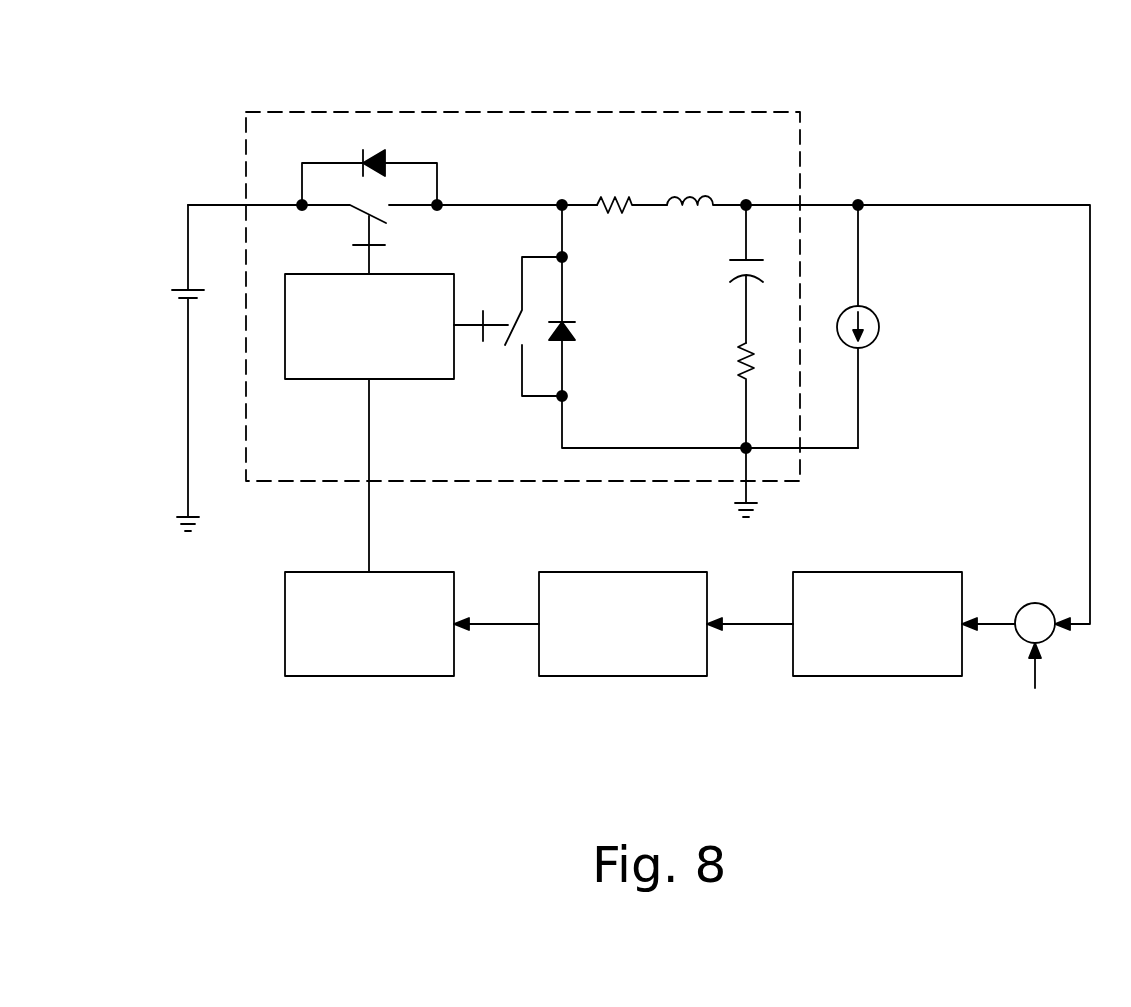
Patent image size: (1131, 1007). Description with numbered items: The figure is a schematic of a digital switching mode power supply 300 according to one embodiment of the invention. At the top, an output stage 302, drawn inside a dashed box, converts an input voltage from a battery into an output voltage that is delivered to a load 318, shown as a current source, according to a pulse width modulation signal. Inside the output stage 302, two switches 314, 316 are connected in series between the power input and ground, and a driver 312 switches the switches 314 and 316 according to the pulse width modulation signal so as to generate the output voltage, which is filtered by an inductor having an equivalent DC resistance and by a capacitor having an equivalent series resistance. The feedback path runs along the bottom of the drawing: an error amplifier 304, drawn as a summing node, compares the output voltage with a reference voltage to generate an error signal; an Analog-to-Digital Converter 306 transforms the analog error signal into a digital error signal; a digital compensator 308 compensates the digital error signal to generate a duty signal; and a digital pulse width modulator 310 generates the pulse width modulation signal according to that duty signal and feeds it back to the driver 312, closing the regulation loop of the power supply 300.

The digital switching mode power supply 300 is at (1012, 94).
The output stage 302 is at (512, 112).
The error amplifier 304 is at (1033, 603).
The Analog-to-Digital Converter (ADC) 306 is at (872, 677).
The digital compensator 308 is at (620, 677).
The digital pulse width modulator 310 is at (367, 677).
The driver 312 is at (335, 380).
The switch 314 is at (402, 216).
The switch 316 is at (509, 357).
The load 318 is at (872, 306).